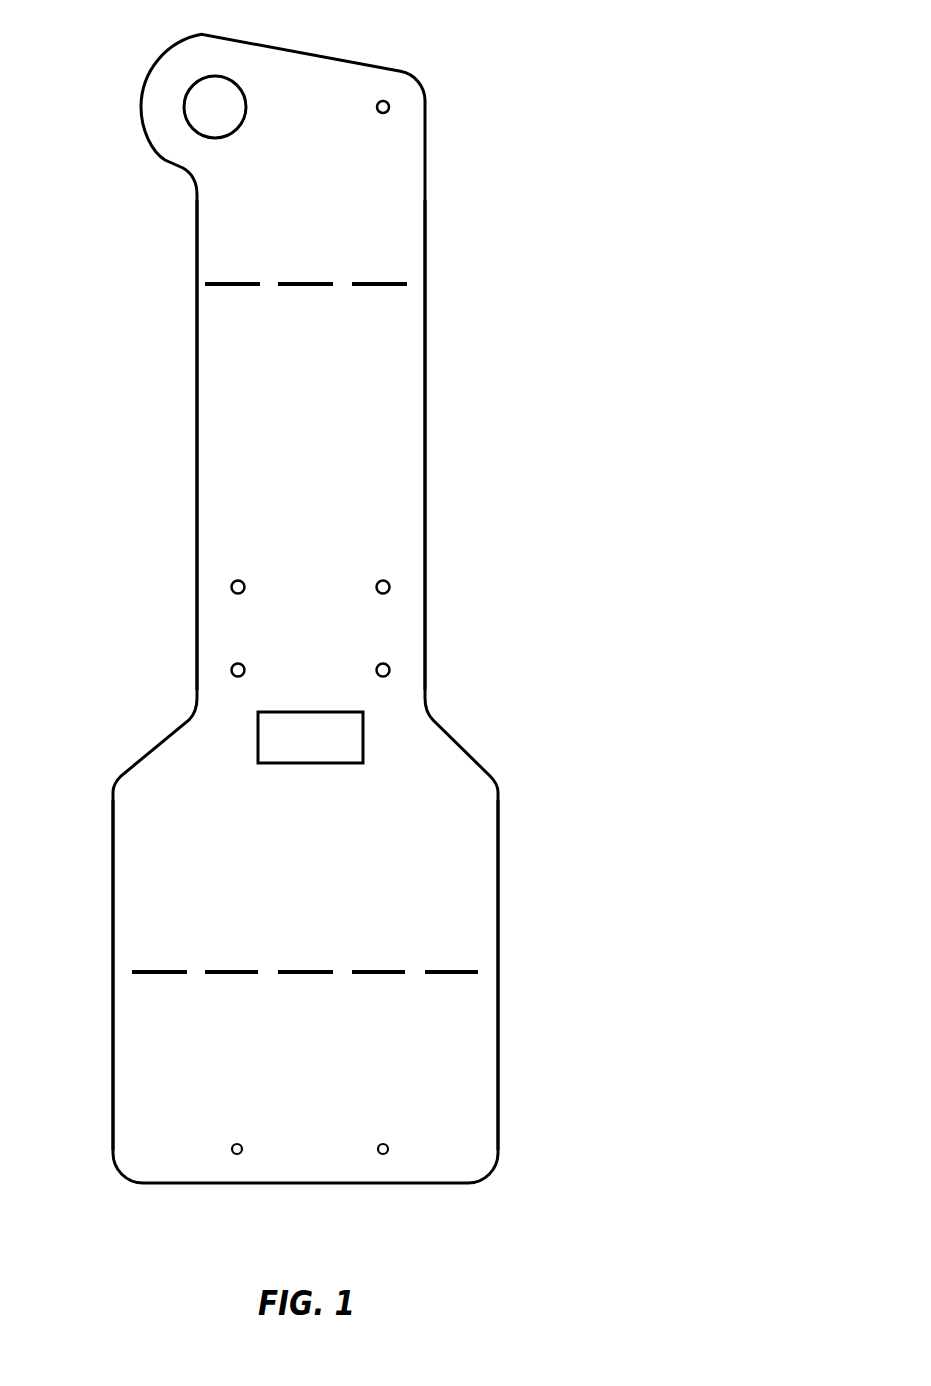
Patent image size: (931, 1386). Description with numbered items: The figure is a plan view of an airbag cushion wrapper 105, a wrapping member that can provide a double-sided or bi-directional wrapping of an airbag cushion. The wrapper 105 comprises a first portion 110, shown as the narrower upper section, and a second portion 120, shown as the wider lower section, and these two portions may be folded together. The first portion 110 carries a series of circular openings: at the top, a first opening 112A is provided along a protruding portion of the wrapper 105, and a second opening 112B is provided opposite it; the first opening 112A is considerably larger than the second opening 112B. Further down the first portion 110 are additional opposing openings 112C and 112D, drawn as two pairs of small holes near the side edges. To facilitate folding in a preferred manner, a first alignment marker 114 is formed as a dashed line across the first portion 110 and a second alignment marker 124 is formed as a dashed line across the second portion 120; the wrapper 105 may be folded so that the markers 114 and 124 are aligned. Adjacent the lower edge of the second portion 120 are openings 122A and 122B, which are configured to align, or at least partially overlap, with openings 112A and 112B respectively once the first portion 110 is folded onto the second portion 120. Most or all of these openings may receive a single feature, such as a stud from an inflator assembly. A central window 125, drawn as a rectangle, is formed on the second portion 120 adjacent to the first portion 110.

The airbag cushion wrapper 105 is at (517, 160).
The first portion 110 is at (451, 417).
The second portion 120 is at (517, 995).
The first opening 112A is at (203, 77).
The second opening 112B is at (383, 100).
The opening 112C is at (231, 587).
The opening 112D is at (231, 670).
The first alignment marker 114 is at (317, 285).
The second alignment marker 124 is at (393, 970).
The central window 125 is at (362, 737).
The opening 122A is at (233, 1153).
The opening 122B is at (388, 1153).